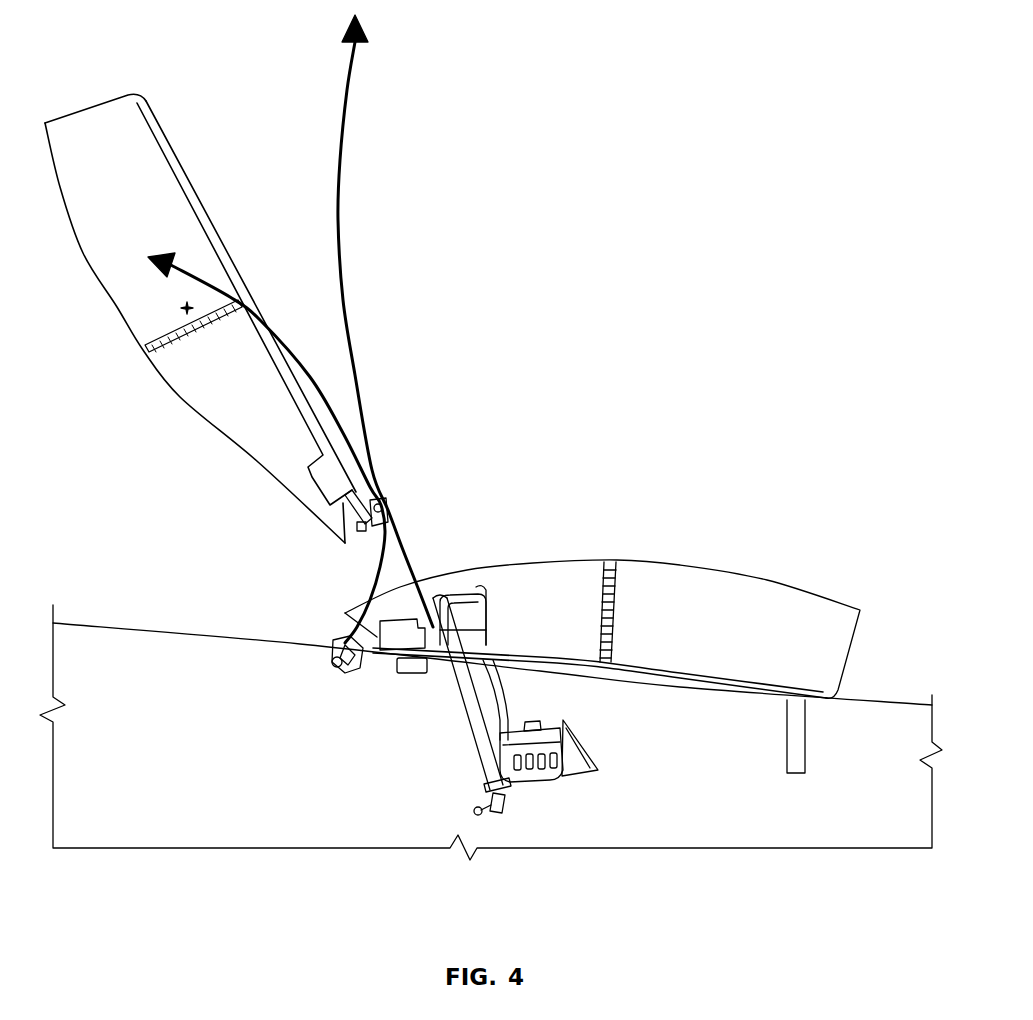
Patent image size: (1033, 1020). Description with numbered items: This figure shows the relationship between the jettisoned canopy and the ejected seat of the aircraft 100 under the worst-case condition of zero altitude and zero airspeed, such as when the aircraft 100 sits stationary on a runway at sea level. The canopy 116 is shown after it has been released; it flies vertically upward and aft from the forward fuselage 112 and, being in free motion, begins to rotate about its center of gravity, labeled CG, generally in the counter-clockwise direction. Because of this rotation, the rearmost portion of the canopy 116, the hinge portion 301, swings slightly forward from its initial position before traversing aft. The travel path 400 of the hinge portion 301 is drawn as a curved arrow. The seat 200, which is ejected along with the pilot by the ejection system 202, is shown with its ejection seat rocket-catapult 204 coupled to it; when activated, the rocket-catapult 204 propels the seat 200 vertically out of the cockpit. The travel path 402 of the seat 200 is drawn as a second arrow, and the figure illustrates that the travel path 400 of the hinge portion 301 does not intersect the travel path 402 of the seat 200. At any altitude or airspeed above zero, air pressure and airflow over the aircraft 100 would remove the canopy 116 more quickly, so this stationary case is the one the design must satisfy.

The aircraft 100 is at (128, 484).
The forward fuselage 112 is at (173, 645).
The canopy 116 is at (122, 290).
The seat 200 is at (580, 747).
The ejection system 202 is at (763, 806).
The ejection seat rocket-catapult 204 is at (507, 800).
The hinge portion 301 is at (390, 502).
The travel path of the hinge portion 400 is at (302, 342).
The travel path of the seat 402 is at (343, 163).